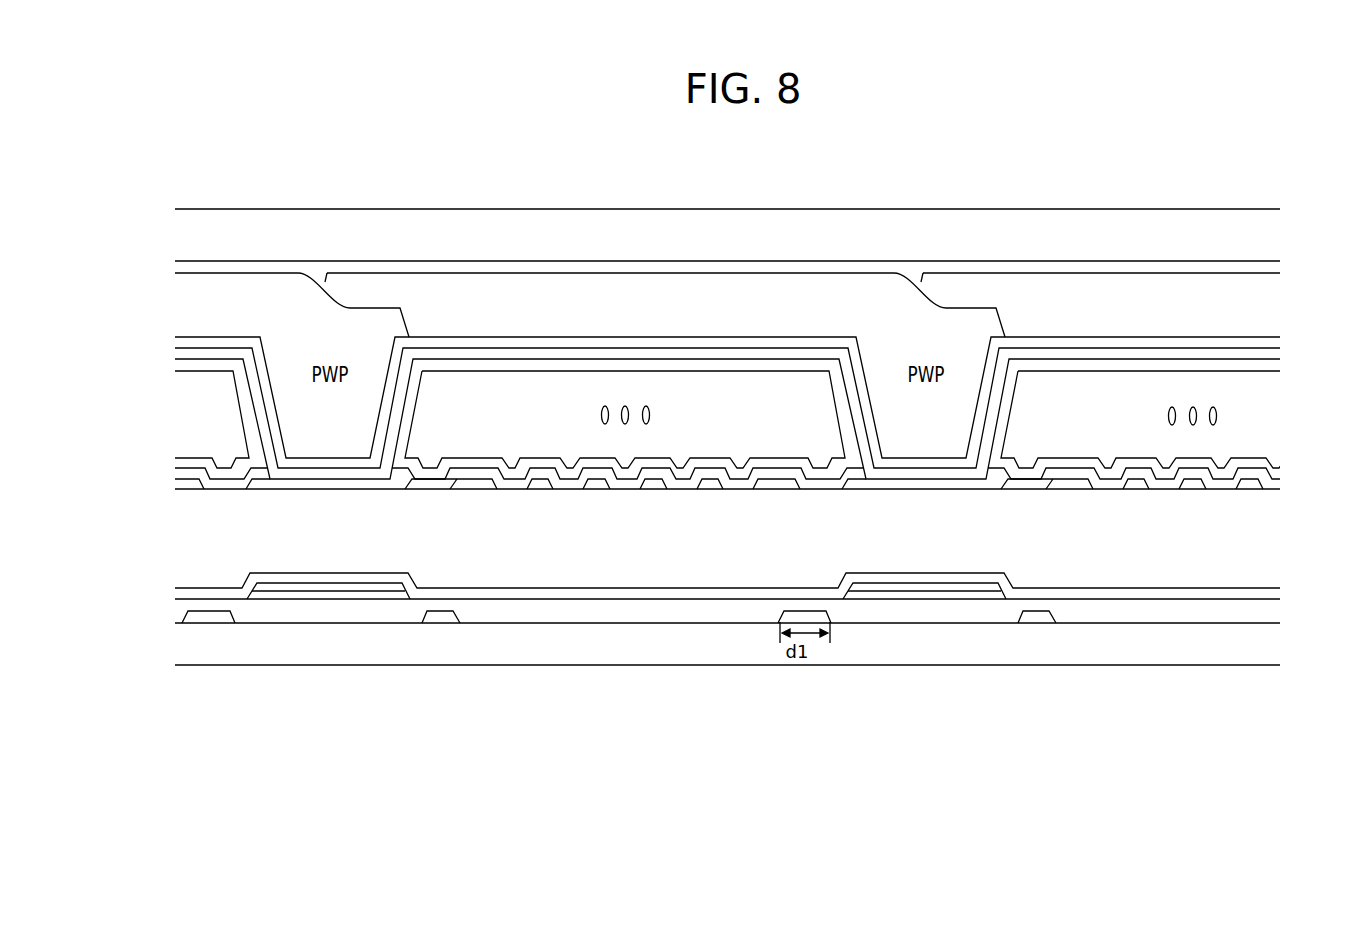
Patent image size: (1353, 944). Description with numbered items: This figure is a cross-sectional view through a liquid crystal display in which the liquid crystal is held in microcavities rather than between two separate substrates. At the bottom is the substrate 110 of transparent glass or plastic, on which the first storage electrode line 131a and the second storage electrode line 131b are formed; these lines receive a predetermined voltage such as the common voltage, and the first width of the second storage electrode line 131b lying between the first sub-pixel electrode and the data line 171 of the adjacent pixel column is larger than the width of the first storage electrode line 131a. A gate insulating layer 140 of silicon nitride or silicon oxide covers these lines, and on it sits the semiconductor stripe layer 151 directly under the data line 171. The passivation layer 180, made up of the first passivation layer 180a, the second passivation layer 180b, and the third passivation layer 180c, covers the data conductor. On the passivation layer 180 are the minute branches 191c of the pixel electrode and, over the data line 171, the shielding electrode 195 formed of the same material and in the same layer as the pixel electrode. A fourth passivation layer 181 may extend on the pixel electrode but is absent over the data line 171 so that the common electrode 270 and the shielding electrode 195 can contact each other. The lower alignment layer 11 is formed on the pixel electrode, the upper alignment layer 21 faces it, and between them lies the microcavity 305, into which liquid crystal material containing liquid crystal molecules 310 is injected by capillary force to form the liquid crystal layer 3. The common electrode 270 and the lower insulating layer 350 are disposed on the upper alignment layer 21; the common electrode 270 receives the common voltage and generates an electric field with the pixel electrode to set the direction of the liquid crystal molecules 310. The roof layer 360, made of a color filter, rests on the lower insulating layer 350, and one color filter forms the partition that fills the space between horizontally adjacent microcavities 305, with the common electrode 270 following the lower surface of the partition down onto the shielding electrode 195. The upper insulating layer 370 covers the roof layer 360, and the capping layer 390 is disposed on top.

The substrate 110 is at (1248, 647).
The gate insulating layer 140 is at (715, 612).
The first storage electrode line 131a is at (445, 618).
The second storage electrode line 131b is at (209, 618).
The semiconductor stripe layer 151 is at (290, 594).
The data line 171 is at (345, 585).
The passivation layer 180 is at (1149, 745).
The first passivation layer 180a is at (765, 599).
The second passivation layer 180b is at (613, 557).
The third passivation layer 180c is at (513, 493).
The fourth passivation layer 181 is at (558, 488).
The minute branches 191c is at (653, 487).
The shielding electrode 195 is at (366, 490).
The liquid crystal layer 3 is at (1255, 441).
The lower alignment layer 11 is at (1268, 475).
The upper alignment layer 21 is at (1265, 362).
The common electrode 270 is at (1265, 348).
The microcavity 305 is at (775, 407).
The liquid crystal molecules 310 is at (1218, 415).
The lower insulating layer 350 is at (1265, 337).
The roof layer 360 is at (1265, 291).
The upper insulating layer 370 is at (1266, 265).
The capping layer 390 is at (1268, 241).